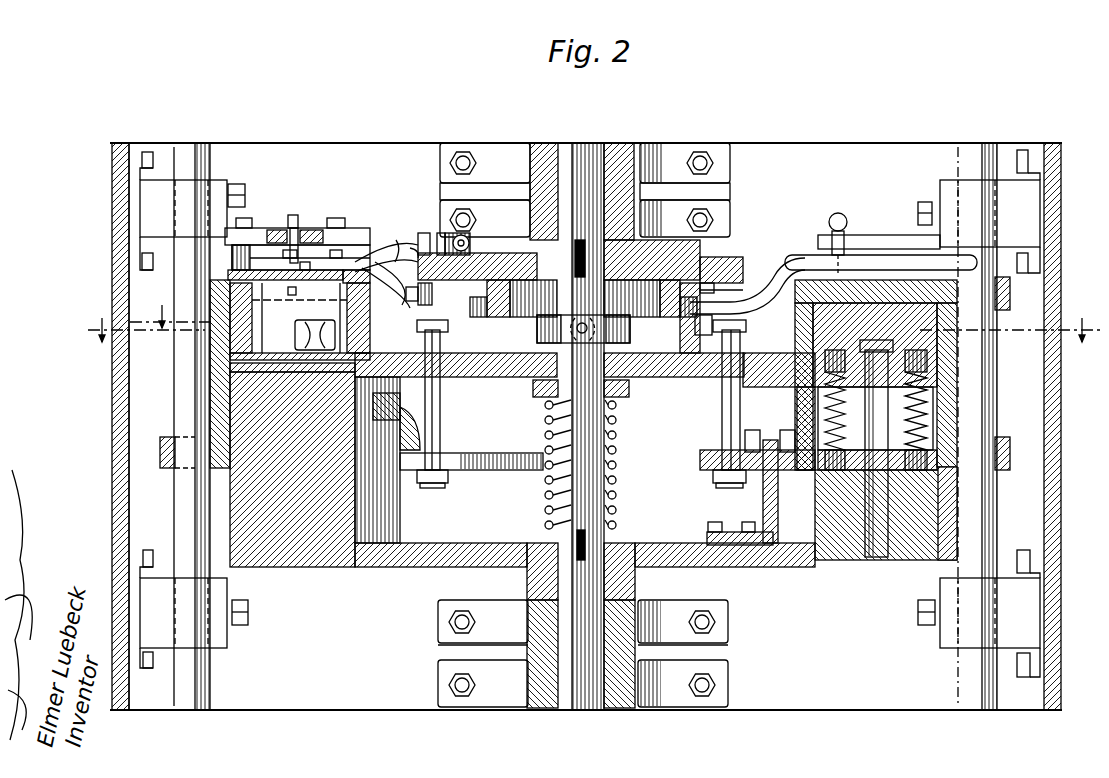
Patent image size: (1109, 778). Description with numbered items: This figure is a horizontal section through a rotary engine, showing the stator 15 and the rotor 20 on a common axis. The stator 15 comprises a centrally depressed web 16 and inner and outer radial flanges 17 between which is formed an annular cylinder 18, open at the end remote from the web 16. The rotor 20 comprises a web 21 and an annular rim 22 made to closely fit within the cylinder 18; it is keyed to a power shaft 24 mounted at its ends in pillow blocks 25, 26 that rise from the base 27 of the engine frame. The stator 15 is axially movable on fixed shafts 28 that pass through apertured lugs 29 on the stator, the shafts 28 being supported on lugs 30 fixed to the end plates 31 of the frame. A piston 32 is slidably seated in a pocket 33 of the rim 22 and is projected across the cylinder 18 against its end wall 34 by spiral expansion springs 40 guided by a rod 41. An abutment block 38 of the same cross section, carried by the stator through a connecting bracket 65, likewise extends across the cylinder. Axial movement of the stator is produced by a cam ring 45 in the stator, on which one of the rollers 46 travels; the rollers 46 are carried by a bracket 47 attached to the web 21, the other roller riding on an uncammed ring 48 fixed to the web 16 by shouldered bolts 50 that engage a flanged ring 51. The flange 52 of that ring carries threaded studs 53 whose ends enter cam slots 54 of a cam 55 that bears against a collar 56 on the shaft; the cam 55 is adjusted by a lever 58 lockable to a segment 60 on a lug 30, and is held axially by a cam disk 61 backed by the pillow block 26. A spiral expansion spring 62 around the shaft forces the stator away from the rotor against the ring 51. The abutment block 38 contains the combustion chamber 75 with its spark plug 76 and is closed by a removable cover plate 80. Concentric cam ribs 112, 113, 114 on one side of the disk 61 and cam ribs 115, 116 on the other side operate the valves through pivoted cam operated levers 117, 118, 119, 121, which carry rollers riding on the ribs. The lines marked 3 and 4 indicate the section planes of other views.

The section line 3- 3 is at (593, 331).
The section line 4- 4 is at (172, 318).
The stator 15 is at (800, 278).
The web 16 is at (702, 415).
The radial flanges 17 is at (220, 404).
The annular cylinder 18 is at (935, 323).
The rotor 20 is at (338, 567).
The web 21 is at (425, 567).
The rim 22 is at (230, 503).
The power shaft 24 is at (590, 628).
The pillow block 25 is at (541, 695).
The pillow block 26 is at (612, 165).
The base 27 is at (372, 704).
The shafts 28 is at (213, 141).
The apertured lugs 29 is at (1000, 293).
The lugs 30 is at (1005, 185).
The end plates 31 is at (112, 212).
The piston 32 is at (920, 350).
The pocket 33 is at (930, 417).
The end wall 34 is at (930, 303).
The abutment block 38 is at (340, 266).
The spiral expansion springs 40 is at (840, 398).
The rod 41 is at (870, 440).
The cam ring 45 is at (402, 478).
The rollers 46 is at (779, 440).
The bracket 47 is at (762, 495).
The ring 48 is at (498, 455).
The bolts 50 is at (722, 414).
The flanged ring 51 is at (448, 355).
The flange 52 is at (706, 303).
The threaded studs 53 is at (464, 312).
The cam slots 54 is at (640, 385).
The cam 55 is at (495, 303).
The collar 56 is at (603, 327).
The lever 58 is at (900, 256).
The segment 60 is at (870, 256).
The cam disk 61 is at (432, 242).
The spiral expansion spring 62 is at (618, 486).
The connecting bracket 65 is at (233, 262).
The combustion chamber 75 is at (300, 327).
The spark plug 76 is at (294, 255).
The cover plate 80 is at (237, 247).
The cam rib 112 is at (710, 257).
The cam rib 113 is at (735, 270).
The cam rib 114 is at (725, 295).
The cam rib 115 is at (412, 255).
The cam rib 116 is at (430, 296).
The cam operated lever 117 is at (452, 199).
The cam operated lever 118 is at (412, 245).
The cam operated lever 119 is at (390, 232).
The cam operated lever 121 is at (340, 300).